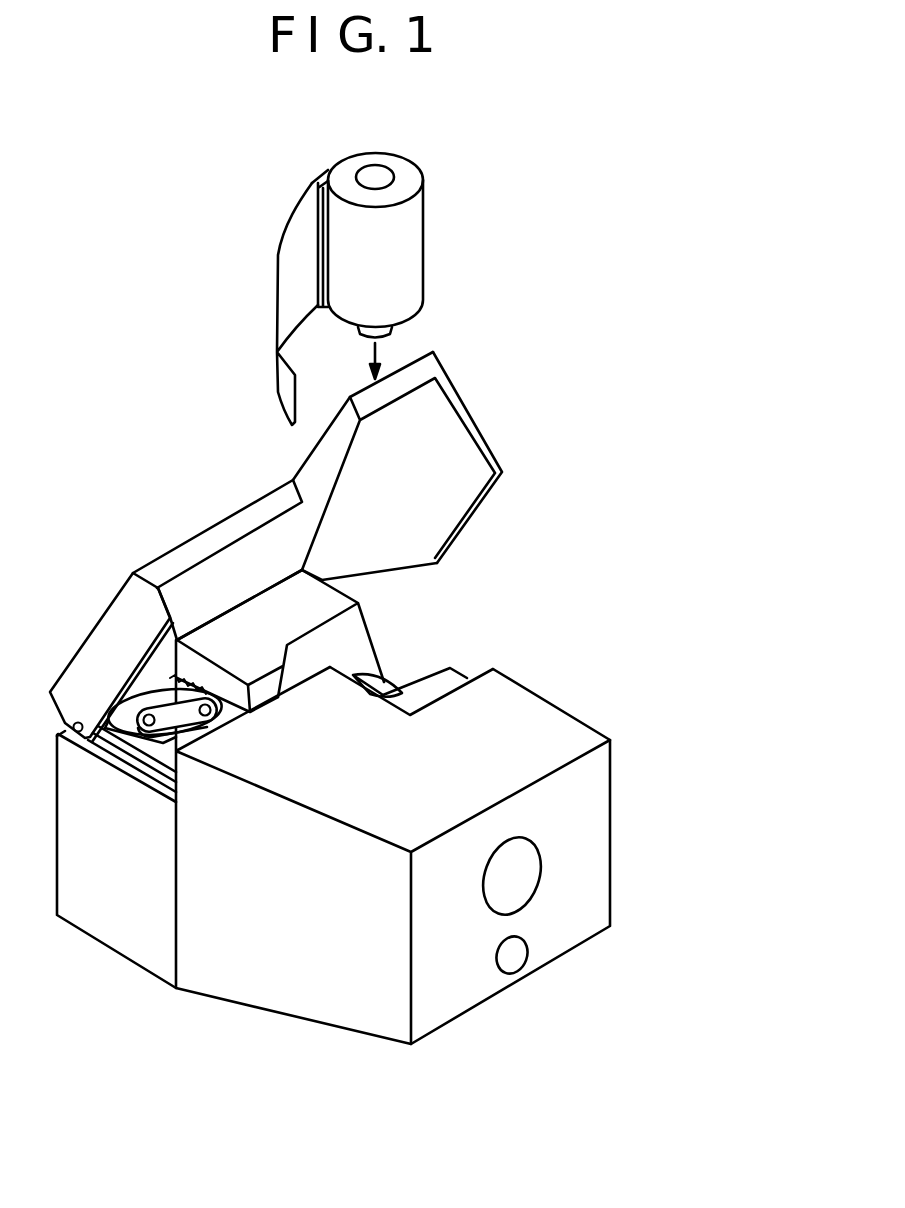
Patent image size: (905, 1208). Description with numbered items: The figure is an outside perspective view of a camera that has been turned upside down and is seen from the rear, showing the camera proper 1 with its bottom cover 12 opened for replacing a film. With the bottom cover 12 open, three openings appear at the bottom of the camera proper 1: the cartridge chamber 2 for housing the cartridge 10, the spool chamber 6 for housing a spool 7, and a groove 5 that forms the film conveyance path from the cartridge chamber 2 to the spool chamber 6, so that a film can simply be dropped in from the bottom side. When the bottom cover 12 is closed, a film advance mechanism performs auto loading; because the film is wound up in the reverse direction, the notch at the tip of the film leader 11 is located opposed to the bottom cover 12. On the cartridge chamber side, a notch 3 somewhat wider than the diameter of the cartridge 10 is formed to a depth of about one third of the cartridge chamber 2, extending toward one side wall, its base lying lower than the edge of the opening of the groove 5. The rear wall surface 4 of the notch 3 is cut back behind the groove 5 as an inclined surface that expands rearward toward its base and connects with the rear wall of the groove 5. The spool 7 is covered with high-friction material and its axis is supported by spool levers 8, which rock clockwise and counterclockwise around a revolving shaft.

The camera proper 1 is at (553, 719).
The cartridge chamber 2 is at (375, 684).
The notch 3 is at (383, 626).
The rear wall surface 4 is at (352, 621).
The groove 5 is at (261, 700).
The spool chamber 6 is at (126, 705).
The spool 7 is at (140, 742).
The spool levers 8 is at (168, 733).
The cartridge 10 is at (413, 175).
The film leader 11 is at (287, 288).
The bottom cover 12 is at (227, 528).